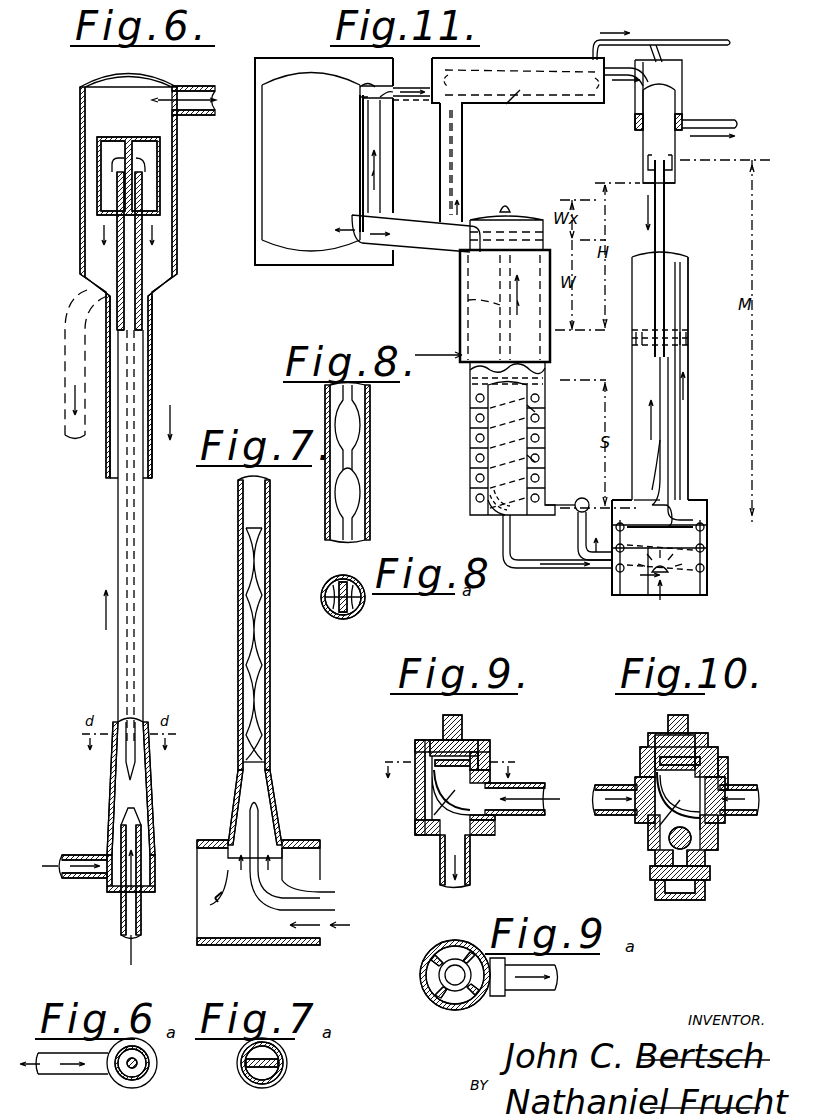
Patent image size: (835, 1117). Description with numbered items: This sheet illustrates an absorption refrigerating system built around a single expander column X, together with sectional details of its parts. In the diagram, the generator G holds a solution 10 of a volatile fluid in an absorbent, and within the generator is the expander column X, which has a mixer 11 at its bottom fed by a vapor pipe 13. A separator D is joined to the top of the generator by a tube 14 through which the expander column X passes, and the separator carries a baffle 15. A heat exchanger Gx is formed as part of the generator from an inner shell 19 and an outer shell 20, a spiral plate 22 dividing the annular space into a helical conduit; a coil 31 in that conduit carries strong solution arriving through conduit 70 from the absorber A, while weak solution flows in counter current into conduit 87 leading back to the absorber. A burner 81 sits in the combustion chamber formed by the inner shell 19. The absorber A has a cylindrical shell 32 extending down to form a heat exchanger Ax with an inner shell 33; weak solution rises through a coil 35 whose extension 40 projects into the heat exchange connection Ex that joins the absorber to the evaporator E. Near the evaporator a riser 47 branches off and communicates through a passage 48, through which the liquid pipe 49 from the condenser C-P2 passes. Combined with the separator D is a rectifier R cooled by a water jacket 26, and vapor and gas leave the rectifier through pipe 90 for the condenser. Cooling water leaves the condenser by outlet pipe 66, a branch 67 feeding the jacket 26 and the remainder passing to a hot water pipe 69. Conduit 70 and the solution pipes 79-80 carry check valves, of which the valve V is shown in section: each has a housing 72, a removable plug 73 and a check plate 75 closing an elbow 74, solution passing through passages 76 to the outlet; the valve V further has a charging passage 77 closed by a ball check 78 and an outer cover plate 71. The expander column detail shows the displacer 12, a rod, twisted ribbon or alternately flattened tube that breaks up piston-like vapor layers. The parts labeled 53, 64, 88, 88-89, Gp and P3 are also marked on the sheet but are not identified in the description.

In FIG. 11, the solution 10 is at (647, 443).
In FIG. 6, the mixer 11 is at (150, 773).
In FIG. 11, the mixer 11 is at (661, 480).
In FIG. 7, the mixer 11 is at (238, 790).
In FIG. 6A, the mixer 11 is at (158, 1063).
In FIG. 6, the displacer 12 is at (127, 752).
In FIG. 8, the displacer 12 is at (352, 424).
In FIG. 8A, the displacer 12 is at (340, 613).
In FIG. 6A, the displacer 12 is at (140, 1068).
In FIG. 6, the vapor pipe 13 is at (122, 890).
In FIG. 11, the vapor pipe 13 is at (678, 335).
In FIG. 6, the tube 14 is at (157, 387).
In FIG. 11, the tube 14 is at (667, 230).
In FIG. 6, the baffle 15 is at (97, 172).
In FIG. 11, the baffle 15 is at (668, 152).
In FIG. 11, the inner shell 19 is at (672, 590).
In FIG. 11, the outer shell 20 is at (707, 590).
In FIG. 7, the spiral plate 22 is at (300, 945).
In FIG. 11, the water jacket 26 is at (635, 118).
In FIG. 11, the coil 31 is at (705, 548).
In FIG. 11, the cylindrical shell 32 is at (540, 425).
In FIG. 11, the inner shell 33 is at (498, 516).
In FIG. 11, the coil 35 is at (540, 468).
In FIG. 11, the extension 40 is at (500, 305).
In FIG. 11, the riser 47 is at (382, 168).
In FIG. 11, the passage 48 is at (392, 86).
In FIG. 11, the liquid pipe 49 is at (410, 102).
In FIG. 11, the housing 53 is at (255, 182).
In FIG. 11, the pipe 64 is at (440, 355).
In FIG. 11, the outlet pipe 66 is at (652, 45).
In FIG. 11, the branch 67 is at (668, 62).
In FIG. 11, the hot water pipe 69 is at (700, 122).
In FIG. 11, the conduit 70 is at (582, 540).
In FIG. 10, the conduit 70 is at (735, 790).
In FIG. 10, the outer cover plate 71 is at (680, 895).
In FIG. 9, the housing 72 is at (415, 790).
In FIG. 10, the housing 72 is at (722, 765).
In FIG. 9A, the housing 72 is at (422, 980).
In FIG. 9, the removable plug 73 is at (466, 716).
In FIG. 10, the removable plug 73 is at (686, 716).
In FIG. 9, the elbow 74 is at (440, 838).
In FIG. 10, the elbow 74 is at (655, 830).
In FIG. 9A, the elbow 74 is at (452, 960).
In FIG. 9, the check plate 75 is at (490, 745).
In FIG. 10, the check plate 75 is at (710, 740).
In FIG. 9, the passages 76 is at (432, 808).
In FIG. 10, the passages 76 is at (655, 778).
In FIG. 9A, the passages 76 is at (455, 1010).
In FIG. 10, the charging passage 77 is at (710, 878).
In FIG. 10, the ball check 78 is at (700, 835).
In FIG. 6, the solution pipes 79-80 is at (65, 438).
In FIG. 9, the solution pipes 79-80 is at (525, 816).
In FIG. 11, the burner 81 is at (655, 578).
In FIG. 11, the conduit 87 is at (513, 553).
In FIG. 6, the inlet pipe 88 is at (180, 86).
In FIG. 7, the pipe 88-89 is at (325, 905).
In FIG. 11, the pipe 90 is at (626, 80).
In FIG. 11, the absorber A is at (505, 284).
In FIG. 11, the heat exchanger Ax is at (470, 455).
In FIG. 11, the condenser C-P2 is at (518, 140).
In FIG. 6, the separator D is at (80, 255).
In FIG. 11, the separator D is at (643, 145).
In FIG. 11, the evaporator E is at (312, 162).
In FIG. 11, the heat exchange connection Ex is at (408, 215).
In FIG. 11, the generator G is at (690, 445).
In FIG. 11, the generator pot Gp is at (673, 547).
In FIG. 7, the generator pot Gp is at (273, 892).
In FIG. 11, the heat exchanger Gx is at (704, 570).
In FIG. 6, the pressure chamber P3 is at (150, 845).
In FIG. 11, the pressure chamber P3 is at (655, 285).
In FIG. 7, the pressure chamber P3 is at (223, 837).
In FIG. 11, the rectifier R is at (680, 98).
In FIG. 11, the check valve V is at (578, 500).
In FIG. 6, the expander column X is at (118, 558).
In FIG. 11, the expander column X is at (665, 372).
In FIG. 8, the expander column X is at (322, 480).
In FIG. 7, the expander column X is at (272, 490).